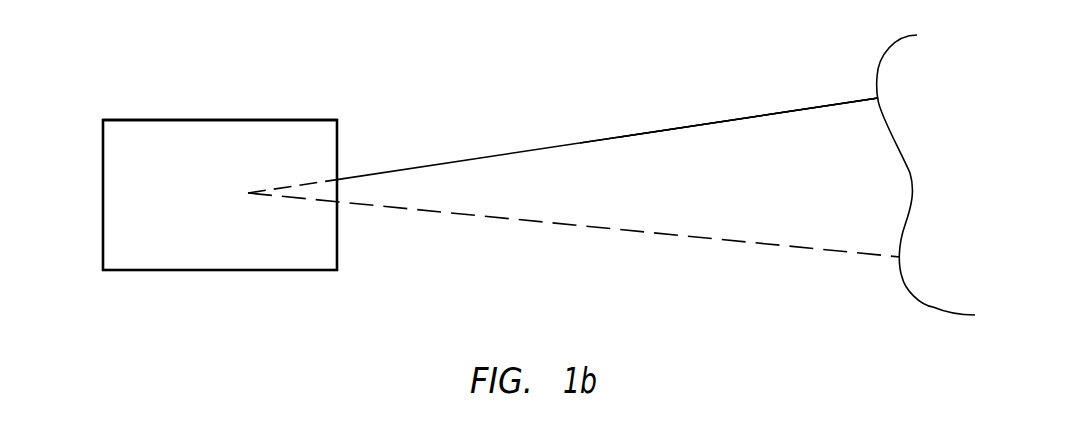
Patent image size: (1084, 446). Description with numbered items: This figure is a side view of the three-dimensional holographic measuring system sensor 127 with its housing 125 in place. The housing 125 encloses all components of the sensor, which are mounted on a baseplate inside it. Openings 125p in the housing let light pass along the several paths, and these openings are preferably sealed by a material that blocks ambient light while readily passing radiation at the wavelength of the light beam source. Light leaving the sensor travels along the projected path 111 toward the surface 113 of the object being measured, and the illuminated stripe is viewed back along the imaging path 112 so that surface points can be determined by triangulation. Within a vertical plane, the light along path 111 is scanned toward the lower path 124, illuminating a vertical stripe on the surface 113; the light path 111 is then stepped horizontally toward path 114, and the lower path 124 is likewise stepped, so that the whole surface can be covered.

The 3-D holographic measuring system sensor 127 is at (104, 196).
The housing 125 is at (240, 120).
The openings 125p is at (338, 192).
The imaging path 112 is at (468, 187).
The projected path 111 is at (620, 135).
The light path 114 is at (749, 117).
The lower path 124 is at (680, 237).
The surface of object 113 is at (883, 50).